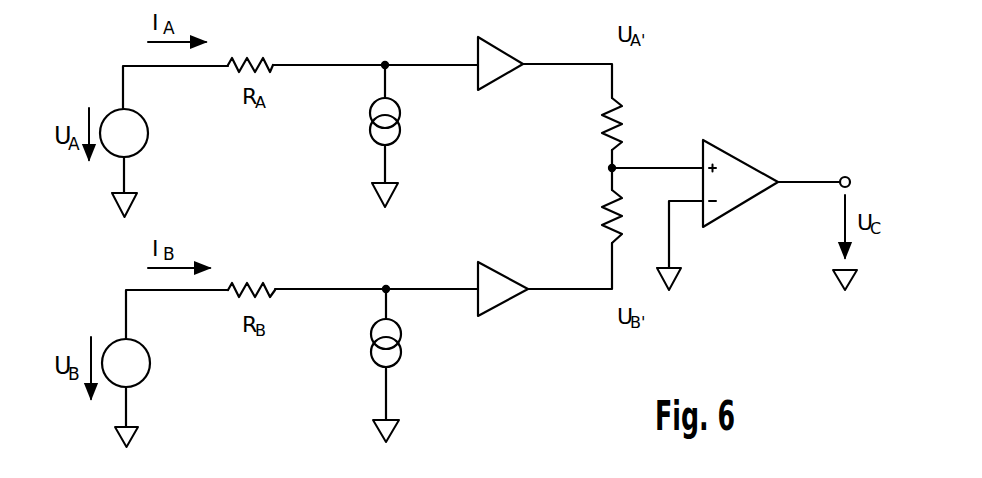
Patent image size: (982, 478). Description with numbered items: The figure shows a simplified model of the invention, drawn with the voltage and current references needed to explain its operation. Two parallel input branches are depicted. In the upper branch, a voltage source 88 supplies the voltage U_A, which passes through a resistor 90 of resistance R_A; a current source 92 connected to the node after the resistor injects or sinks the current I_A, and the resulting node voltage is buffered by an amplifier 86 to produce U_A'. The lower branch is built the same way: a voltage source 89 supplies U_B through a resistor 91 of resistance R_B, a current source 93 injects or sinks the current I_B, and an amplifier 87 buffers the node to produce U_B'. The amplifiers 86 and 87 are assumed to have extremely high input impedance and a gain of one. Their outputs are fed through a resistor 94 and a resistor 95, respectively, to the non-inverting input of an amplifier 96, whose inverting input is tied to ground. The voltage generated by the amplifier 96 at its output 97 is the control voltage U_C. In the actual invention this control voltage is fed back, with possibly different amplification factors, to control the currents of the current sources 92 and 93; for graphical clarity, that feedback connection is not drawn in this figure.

The amplifier 86 is at (500, 55).
The amplifier 87 is at (498, 279).
The voltage source 88 is at (143, 143).
The voltage source 89 is at (140, 368).
The resistor 90 is at (256, 54).
The resistor 91 is at (255, 282).
The current source 92 is at (392, 136).
The current source 93 is at (393, 357).
The resistor 94 is at (620, 118).
The resistor 95 is at (603, 218).
The amplifier 96 is at (747, 173).
The output 97 is at (850, 172).